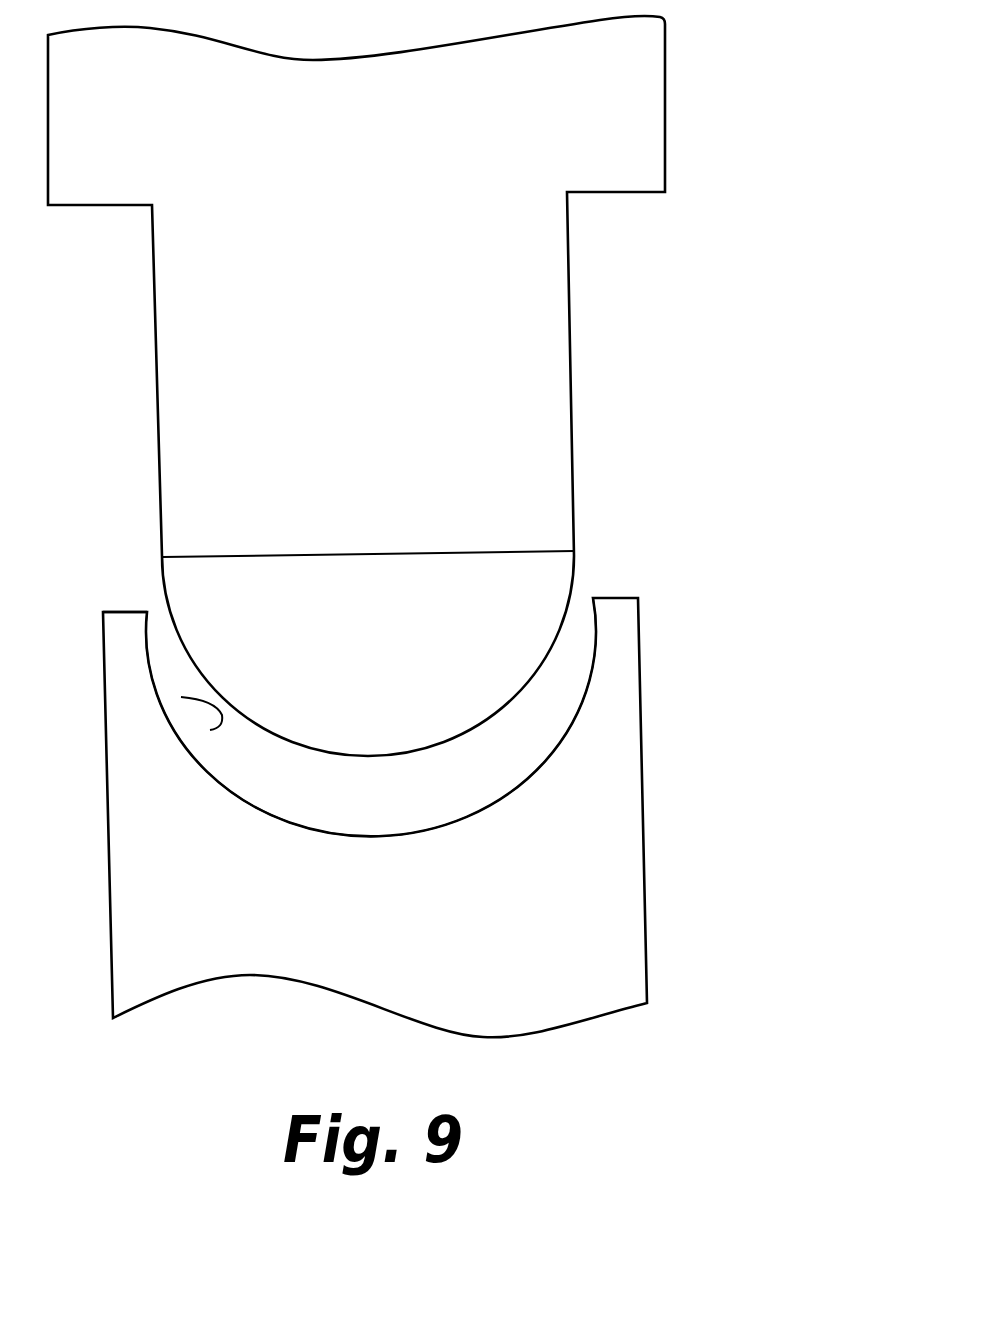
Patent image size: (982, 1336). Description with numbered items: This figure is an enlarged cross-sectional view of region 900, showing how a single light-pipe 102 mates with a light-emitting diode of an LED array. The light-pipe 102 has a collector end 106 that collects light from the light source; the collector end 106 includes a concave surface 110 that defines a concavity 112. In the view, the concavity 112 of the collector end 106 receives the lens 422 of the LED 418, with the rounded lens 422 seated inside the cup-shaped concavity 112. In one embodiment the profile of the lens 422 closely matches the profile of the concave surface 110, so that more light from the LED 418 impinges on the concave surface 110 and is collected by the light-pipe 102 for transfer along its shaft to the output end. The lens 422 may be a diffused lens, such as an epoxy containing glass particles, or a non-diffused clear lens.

The LED 418 is at (648, 115).
The lens 422 is at (553, 575).
The light-pipe 102 is at (623, 867).
The concavity 112 is at (550, 682).
The collector end 106 is at (123, 610).
The concave surface 110 is at (181, 697).
The region 900 is at (728, 300).